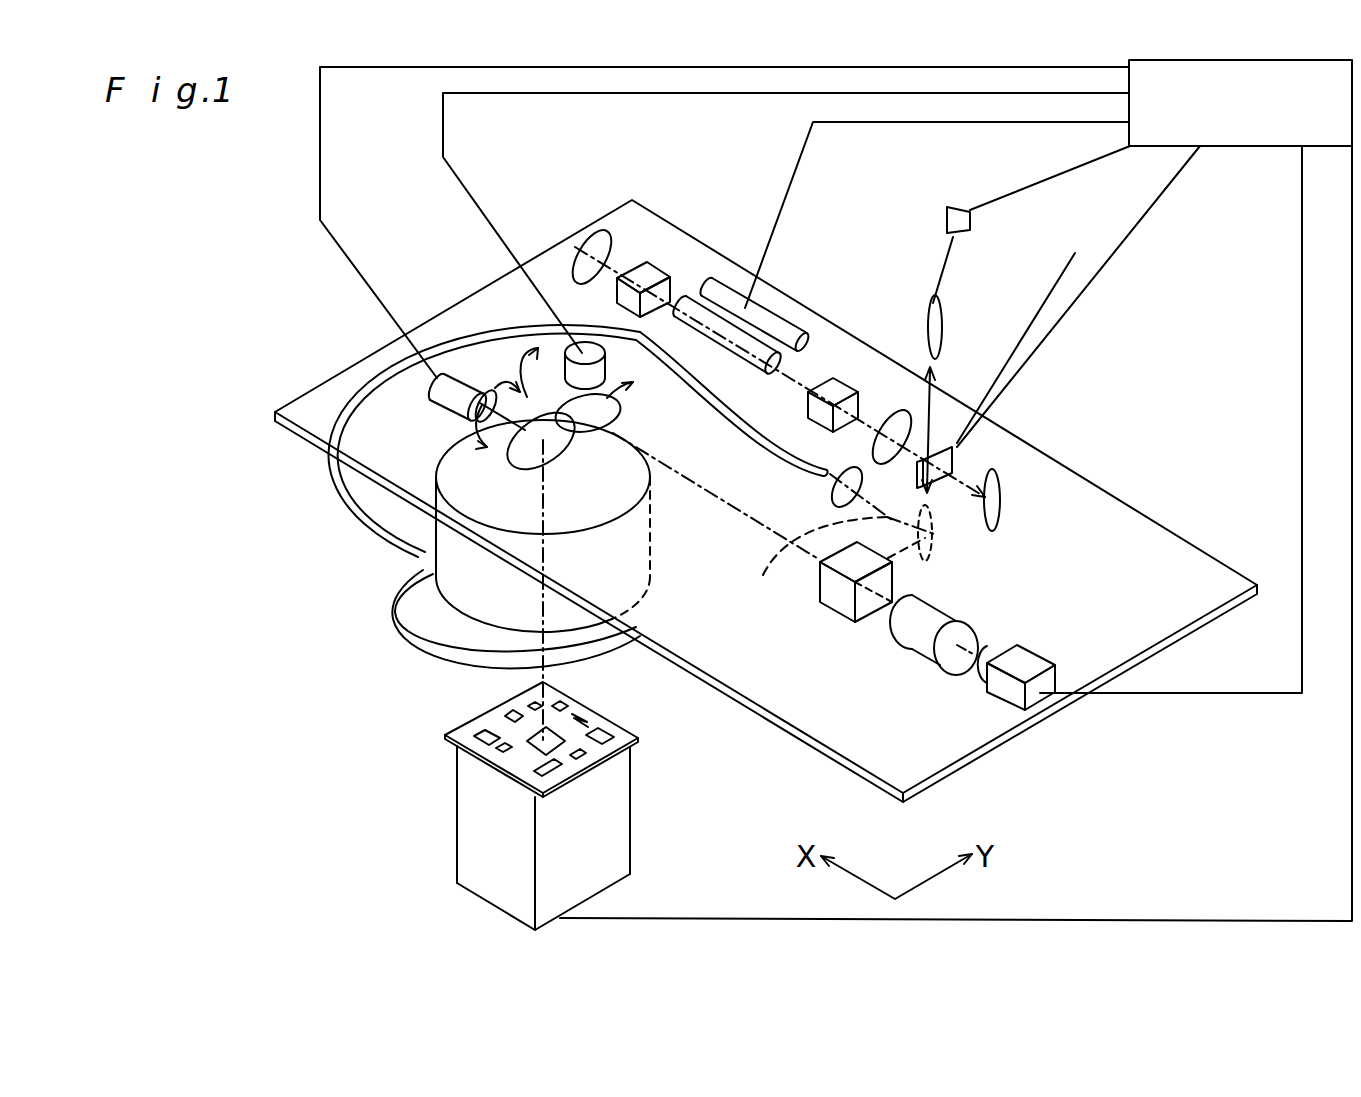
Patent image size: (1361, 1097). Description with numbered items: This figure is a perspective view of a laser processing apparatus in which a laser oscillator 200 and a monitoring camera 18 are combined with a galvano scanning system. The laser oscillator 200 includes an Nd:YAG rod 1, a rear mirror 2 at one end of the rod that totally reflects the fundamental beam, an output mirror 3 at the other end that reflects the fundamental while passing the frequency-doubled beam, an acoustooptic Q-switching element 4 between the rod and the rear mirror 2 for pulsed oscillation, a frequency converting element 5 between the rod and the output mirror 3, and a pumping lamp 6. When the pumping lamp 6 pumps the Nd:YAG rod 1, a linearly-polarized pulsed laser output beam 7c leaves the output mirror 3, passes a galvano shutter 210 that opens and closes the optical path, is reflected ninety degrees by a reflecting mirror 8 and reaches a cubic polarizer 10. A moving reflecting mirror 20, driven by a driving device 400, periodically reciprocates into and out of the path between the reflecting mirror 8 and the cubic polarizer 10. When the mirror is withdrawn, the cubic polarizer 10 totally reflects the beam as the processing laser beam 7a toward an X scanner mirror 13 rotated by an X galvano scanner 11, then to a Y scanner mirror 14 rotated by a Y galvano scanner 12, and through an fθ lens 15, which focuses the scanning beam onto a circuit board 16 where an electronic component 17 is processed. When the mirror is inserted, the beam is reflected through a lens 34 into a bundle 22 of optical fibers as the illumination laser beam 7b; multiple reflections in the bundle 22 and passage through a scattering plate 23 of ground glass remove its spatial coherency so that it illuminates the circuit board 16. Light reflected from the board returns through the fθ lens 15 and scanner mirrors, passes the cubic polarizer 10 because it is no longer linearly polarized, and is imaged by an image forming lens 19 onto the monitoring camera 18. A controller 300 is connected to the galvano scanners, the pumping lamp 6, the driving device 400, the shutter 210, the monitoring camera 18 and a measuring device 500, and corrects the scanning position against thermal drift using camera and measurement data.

The Nd:YAG rod 1 is at (750, 340).
The rear mirror 2 is at (607, 228).
The output mirror 3 is at (908, 410).
The acoustooptic Q-switching element 4 is at (663, 270).
The frequency converting element 5 is at (850, 375).
The pumping lamp 6 is at (803, 335).
The laser output beam (processing laser beam) 7a is at (707, 495).
The laser output beam (illumination laser beam) 7b is at (838, 566).
The laser output beam 7c is at (957, 458).
The reflecting mirror 8 is at (997, 473).
The cubic polarizer 10 is at (830, 607).
The X galvano scanner 11 is at (540, 418).
The Y galvano scanner 12 is at (437, 378).
The X scanner mirror 13 is at (483, 392).
The Y scanner mirror 14 is at (450, 370).
The fθ lens 15 is at (432, 440).
The circuit board 16 is at (597, 768).
The electronic component 17 is at (533, 740).
The monitoring camera 18 is at (1007, 707).
The image forming lens 19 is at (913, 657).
The moving reflecting mirror 20 is at (941, 322).
The bundle of optical fibers 22 is at (332, 490).
The scattering plate 23 is at (440, 628).
The lens 34 is at (830, 492).
The laser oscillator 200 is at (840, 352).
The galvano shutter 210 is at (1030, 330).
The controller 300 is at (1237, 146).
The driving device 400 is at (970, 213).
The measuring device 500 is at (457, 806).